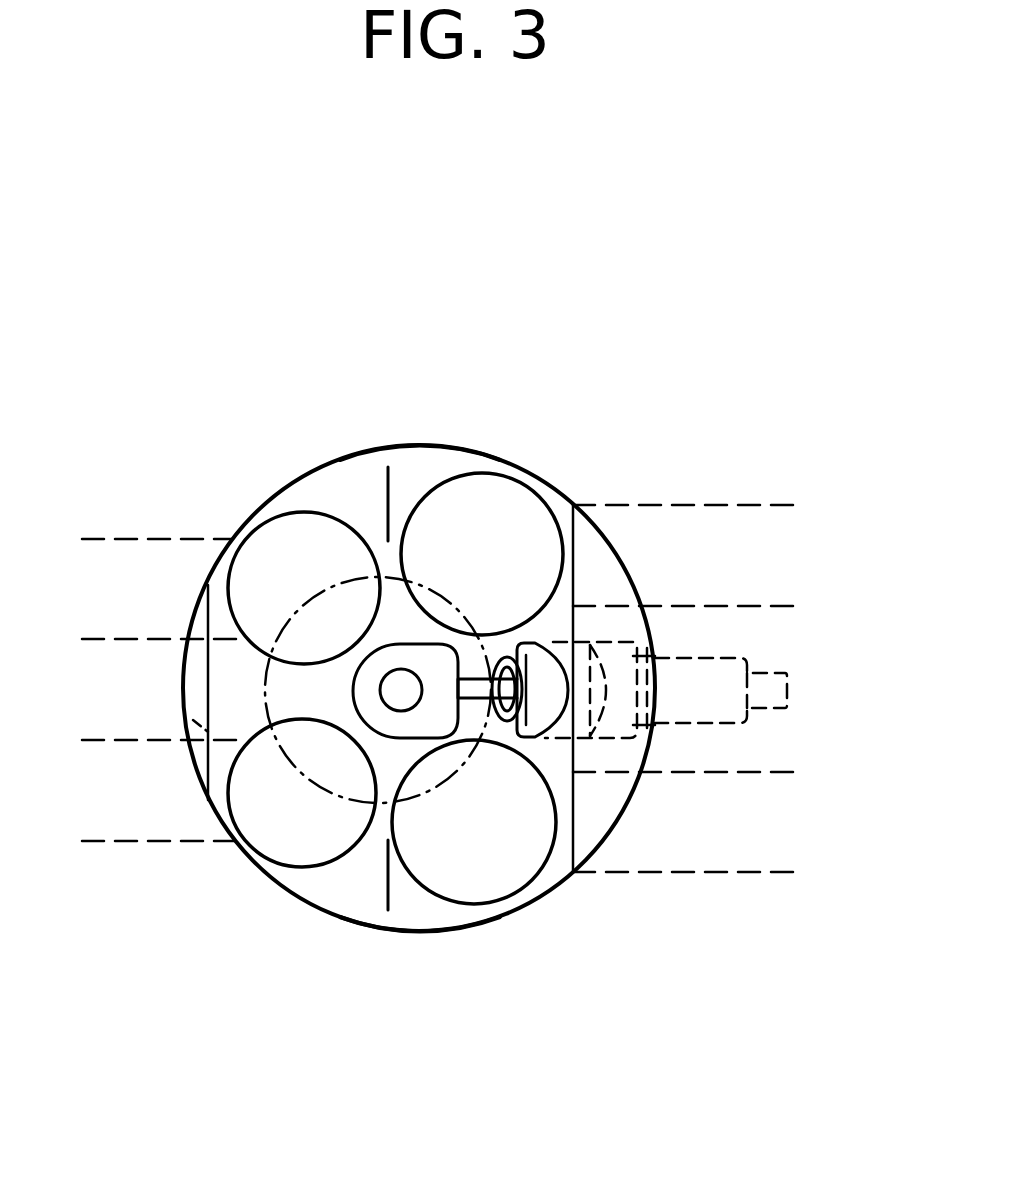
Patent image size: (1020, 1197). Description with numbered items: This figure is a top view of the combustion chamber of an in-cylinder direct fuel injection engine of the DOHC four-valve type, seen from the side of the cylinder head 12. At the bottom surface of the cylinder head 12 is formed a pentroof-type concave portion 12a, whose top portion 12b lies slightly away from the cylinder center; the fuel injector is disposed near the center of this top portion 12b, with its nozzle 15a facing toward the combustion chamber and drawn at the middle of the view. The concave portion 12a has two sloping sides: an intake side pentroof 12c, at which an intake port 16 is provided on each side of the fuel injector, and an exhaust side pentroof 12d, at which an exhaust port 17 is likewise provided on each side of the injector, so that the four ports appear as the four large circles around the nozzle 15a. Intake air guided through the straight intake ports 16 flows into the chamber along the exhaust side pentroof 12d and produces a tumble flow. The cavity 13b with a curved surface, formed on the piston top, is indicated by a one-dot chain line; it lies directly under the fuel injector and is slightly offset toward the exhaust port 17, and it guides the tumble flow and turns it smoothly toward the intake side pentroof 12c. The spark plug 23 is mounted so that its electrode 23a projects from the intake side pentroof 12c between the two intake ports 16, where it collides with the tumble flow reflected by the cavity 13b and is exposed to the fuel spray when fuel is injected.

The cylinder head 12 is at (577, 490).
The concave portion 12a is at (422, 452).
The top portion 12b is at (385, 485).
The intake side pentroof 12c is at (432, 932).
The exhaust side pentroof 12d is at (330, 897).
The cavity 13b is at (262, 704).
The nozzle 15a is at (403, 665).
The intake port 16 is at (518, 507).
The exhaust port 17 is at (274, 520).
The spark plug 23 is at (723, 658).
The electrode 23a is at (476, 698).